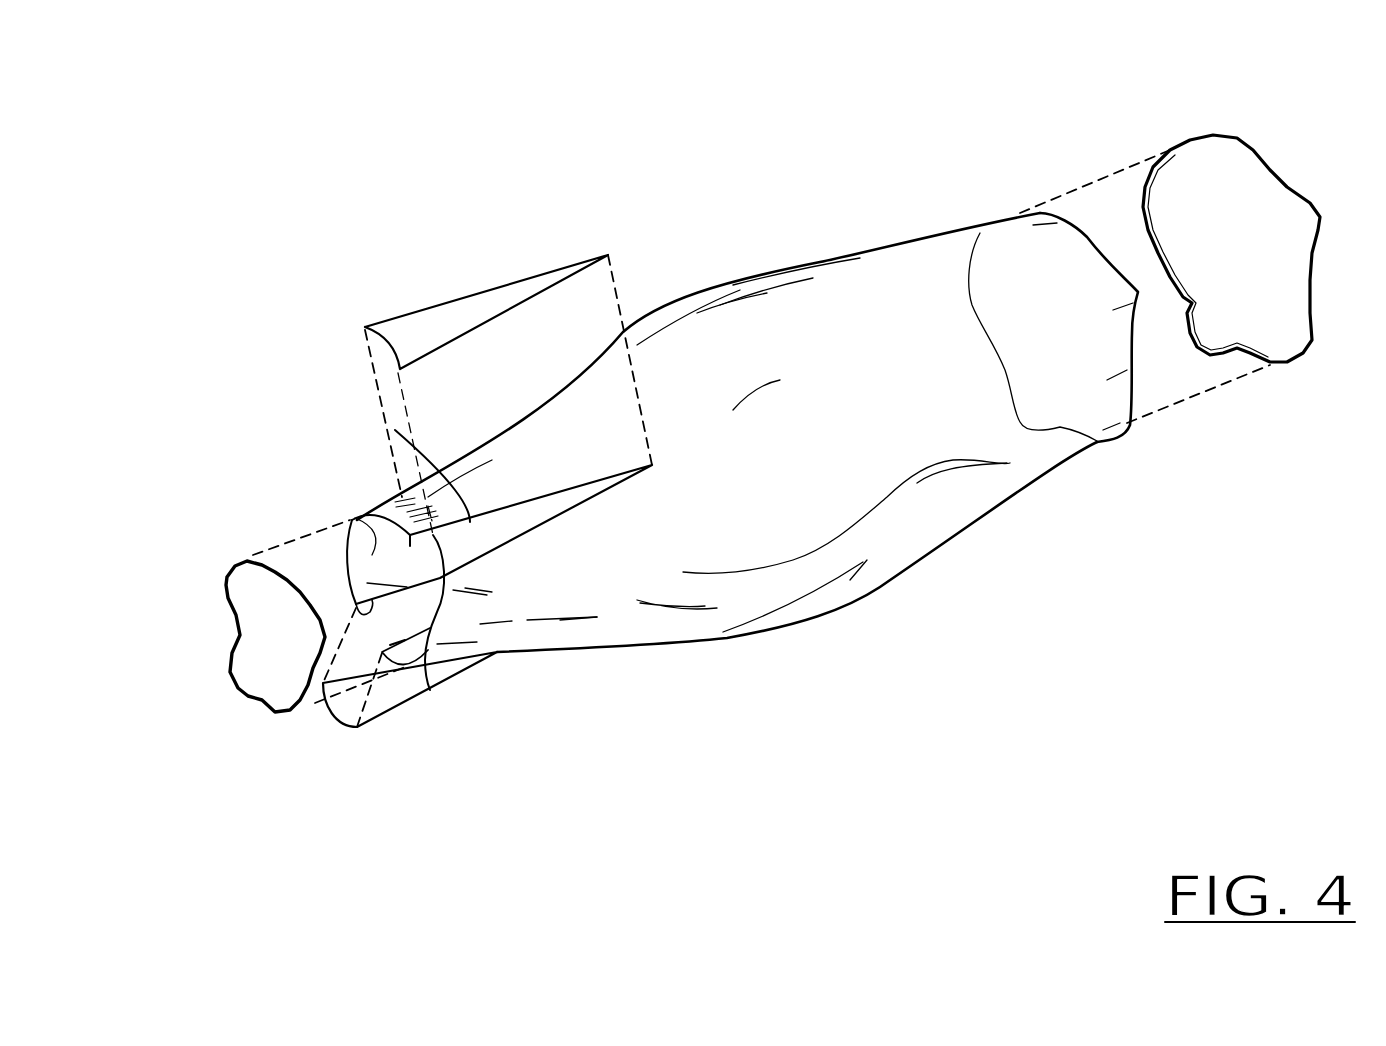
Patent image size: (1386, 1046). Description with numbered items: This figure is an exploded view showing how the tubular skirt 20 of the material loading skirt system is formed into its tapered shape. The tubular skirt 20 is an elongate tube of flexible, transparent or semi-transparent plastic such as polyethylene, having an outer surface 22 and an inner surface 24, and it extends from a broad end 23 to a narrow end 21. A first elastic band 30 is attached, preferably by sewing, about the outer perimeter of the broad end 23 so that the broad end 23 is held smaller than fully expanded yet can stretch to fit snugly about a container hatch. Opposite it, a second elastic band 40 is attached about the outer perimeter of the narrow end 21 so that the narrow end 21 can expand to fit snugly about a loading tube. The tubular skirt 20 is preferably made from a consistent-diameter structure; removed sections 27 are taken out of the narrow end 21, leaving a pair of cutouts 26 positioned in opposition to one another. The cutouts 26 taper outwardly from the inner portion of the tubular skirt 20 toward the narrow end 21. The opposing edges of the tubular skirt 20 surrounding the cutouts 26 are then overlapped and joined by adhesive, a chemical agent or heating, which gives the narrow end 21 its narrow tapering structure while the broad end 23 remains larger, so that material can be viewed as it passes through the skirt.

The tubular skirt 20 is at (865, 240).
The narrow end 21 is at (430, 690).
The outer surface 22 is at (905, 540).
The broad end 23 is at (1083, 238).
The inner surface 24 is at (357, 558).
The cutouts 26 is at (395, 430).
The removed sections 27 is at (425, 322).
The first elastic band 30 is at (1247, 136).
The second elastic band 40 is at (226, 585).